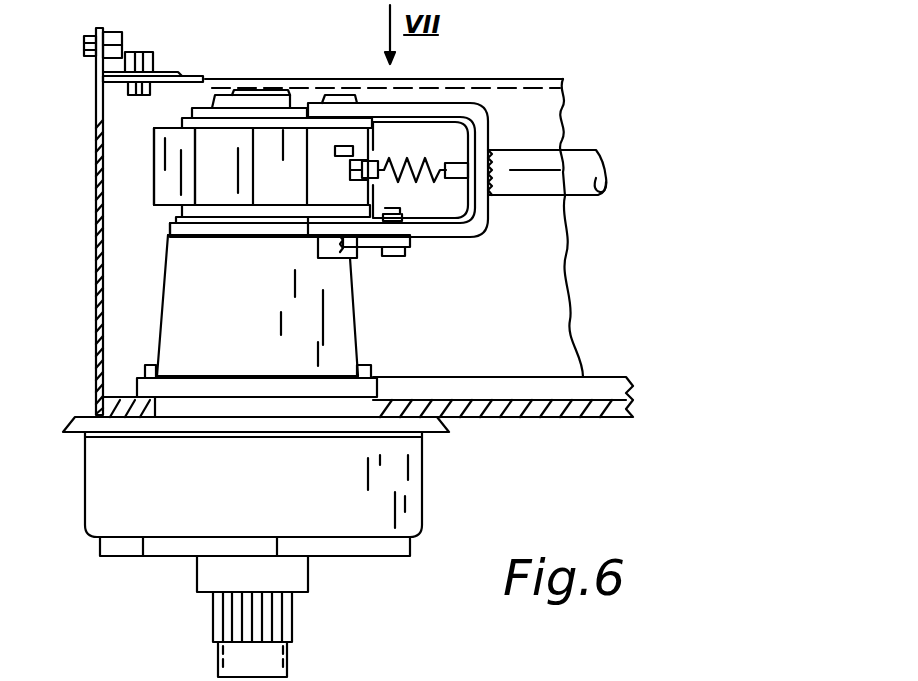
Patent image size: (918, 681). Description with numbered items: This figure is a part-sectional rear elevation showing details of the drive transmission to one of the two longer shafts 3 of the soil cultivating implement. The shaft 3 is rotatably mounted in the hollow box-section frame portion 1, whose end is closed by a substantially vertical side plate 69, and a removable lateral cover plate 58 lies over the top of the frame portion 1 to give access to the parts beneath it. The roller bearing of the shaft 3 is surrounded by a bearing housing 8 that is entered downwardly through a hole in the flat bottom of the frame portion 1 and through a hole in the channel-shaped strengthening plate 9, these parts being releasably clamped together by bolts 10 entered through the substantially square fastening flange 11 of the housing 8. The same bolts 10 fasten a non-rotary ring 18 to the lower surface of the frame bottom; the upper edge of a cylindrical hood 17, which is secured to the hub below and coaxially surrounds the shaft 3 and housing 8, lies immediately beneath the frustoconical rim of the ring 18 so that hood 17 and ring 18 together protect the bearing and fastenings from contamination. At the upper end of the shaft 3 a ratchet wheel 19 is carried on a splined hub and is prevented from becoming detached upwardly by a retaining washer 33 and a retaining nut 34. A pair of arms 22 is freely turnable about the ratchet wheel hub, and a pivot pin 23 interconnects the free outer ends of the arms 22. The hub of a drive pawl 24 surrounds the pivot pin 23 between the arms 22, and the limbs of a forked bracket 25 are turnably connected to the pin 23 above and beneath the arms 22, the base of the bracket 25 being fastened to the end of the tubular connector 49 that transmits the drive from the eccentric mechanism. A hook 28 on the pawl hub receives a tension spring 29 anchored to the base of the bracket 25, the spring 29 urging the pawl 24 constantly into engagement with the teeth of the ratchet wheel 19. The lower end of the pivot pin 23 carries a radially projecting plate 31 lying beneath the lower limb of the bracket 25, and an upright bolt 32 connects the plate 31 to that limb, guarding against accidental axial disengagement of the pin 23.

The hollow box-section frame portion 1 is at (568, 78).
The shaft 3 is at (268, 92).
The bearing housing 8 is at (170, 257).
The strengthening plate 9 is at (481, 382).
The bolt 10 is at (143, 365).
The fastening flange 11 is at (235, 362).
The cylindrical hood 17 is at (397, 490).
The ring 18 is at (238, 424).
The ratchet wheel 19 is at (160, 160).
The arm 22 is at (237, 127).
The pivot pin 23 is at (342, 95).
The drive pawl 24 is at (320, 148).
The forked bracket 25 is at (437, 105).
The hook 28 is at (385, 178).
The tension spring 29 is at (440, 142).
The plate 31 is at (358, 248).
The bolt 32 is at (398, 254).
The retaining washer 33 is at (302, 118).
The retaining nut 34 is at (222, 104).
The tubular connector 49 is at (590, 152).
The lateral cover plate 58 is at (163, 68).
The side plate 69 is at (95, 101).